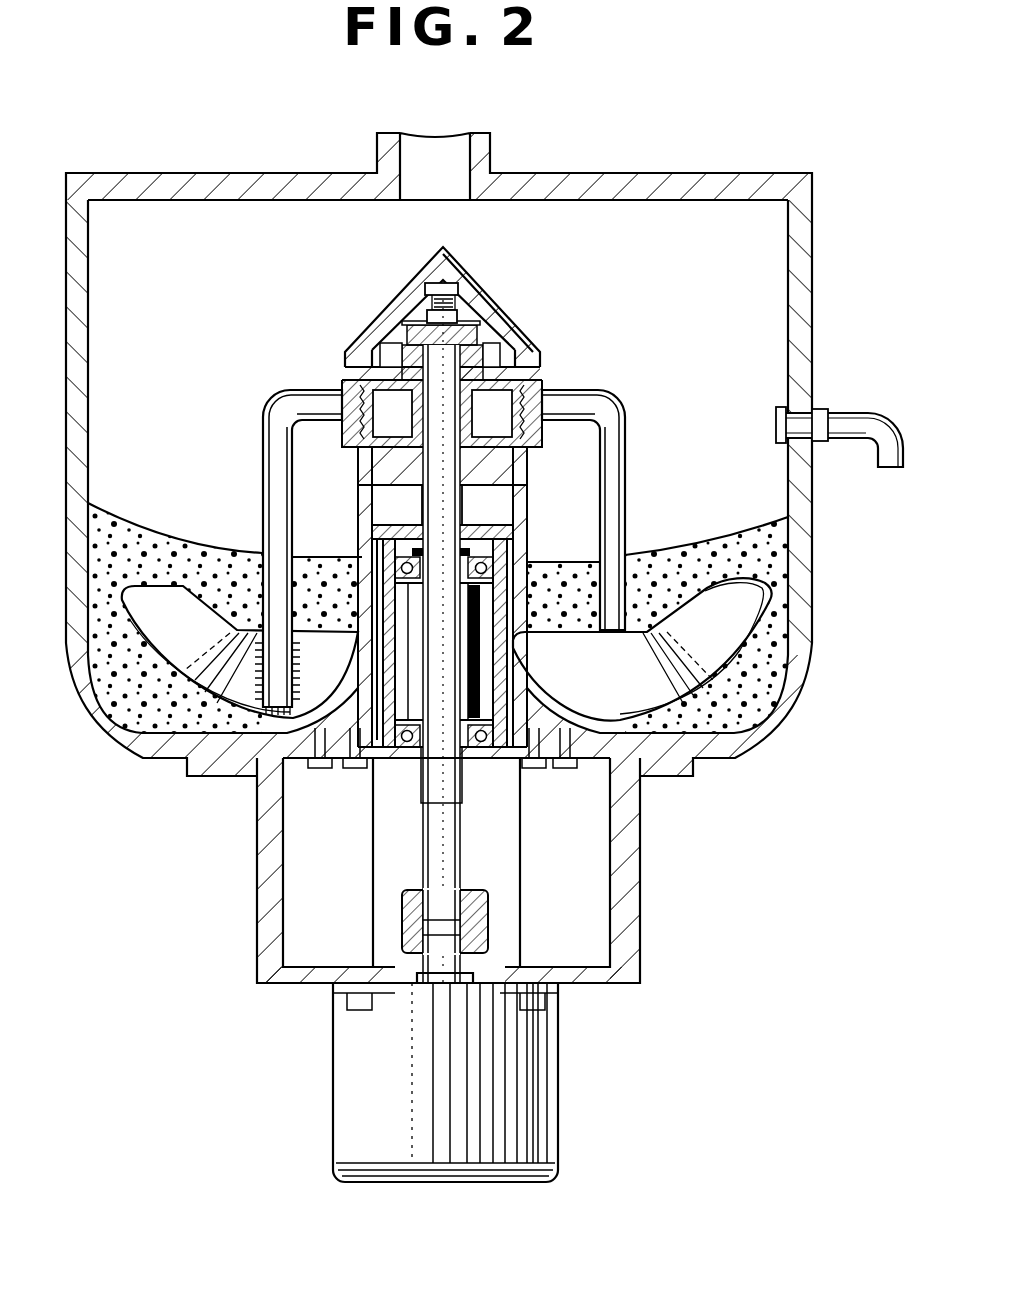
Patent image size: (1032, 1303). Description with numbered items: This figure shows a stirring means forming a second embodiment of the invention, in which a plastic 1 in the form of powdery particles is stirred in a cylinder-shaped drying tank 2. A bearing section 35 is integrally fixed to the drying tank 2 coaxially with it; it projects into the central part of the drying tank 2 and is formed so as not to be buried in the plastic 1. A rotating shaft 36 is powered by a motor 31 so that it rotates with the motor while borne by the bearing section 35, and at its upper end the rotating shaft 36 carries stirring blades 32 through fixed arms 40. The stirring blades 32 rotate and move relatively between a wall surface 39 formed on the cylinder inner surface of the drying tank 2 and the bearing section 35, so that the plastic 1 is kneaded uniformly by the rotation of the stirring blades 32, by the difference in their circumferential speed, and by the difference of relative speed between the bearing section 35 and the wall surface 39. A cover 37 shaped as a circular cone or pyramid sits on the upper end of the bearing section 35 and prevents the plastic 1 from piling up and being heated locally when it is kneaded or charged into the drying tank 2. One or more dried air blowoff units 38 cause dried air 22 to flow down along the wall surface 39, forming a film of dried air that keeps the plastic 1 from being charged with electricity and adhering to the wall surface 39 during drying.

The plastic 1 is at (780, 572).
The drying tank 2 is at (805, 325).
The dried air 22 is at (898, 482).
The motor 31 is at (547, 1100).
The stirring blades 32 is at (742, 618).
The bearing section 35 is at (527, 474).
The rotating shaft 36 is at (457, 863).
The cover 37 is at (478, 298).
The dried air blowoff unit 38 is at (833, 413).
The wall surface 39 is at (795, 244).
The fixed arms 40 is at (620, 408).